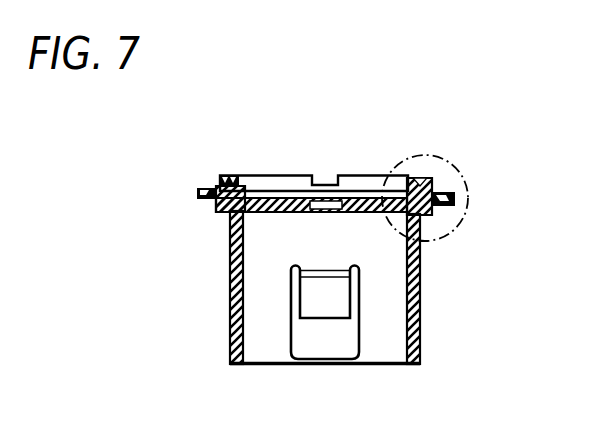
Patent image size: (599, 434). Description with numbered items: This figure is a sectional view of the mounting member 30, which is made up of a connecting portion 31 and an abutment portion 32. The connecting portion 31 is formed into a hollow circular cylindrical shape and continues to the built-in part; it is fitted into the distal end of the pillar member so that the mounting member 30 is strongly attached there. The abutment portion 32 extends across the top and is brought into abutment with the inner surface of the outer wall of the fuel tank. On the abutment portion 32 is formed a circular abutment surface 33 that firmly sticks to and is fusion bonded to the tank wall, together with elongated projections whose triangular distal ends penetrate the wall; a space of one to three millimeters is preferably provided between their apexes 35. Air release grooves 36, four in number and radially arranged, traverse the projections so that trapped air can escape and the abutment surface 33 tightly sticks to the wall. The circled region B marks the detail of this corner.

The mounting member 30 is at (330, 251).
The connecting portion 31 is at (230, 307).
The abutment portion 32 is at (216, 211).
The abutment surface 33 is at (455, 197).
The apexes 35 is at (418, 178).
The air release grooves 36 is at (216, 184).
The detail region B is at (460, 220).